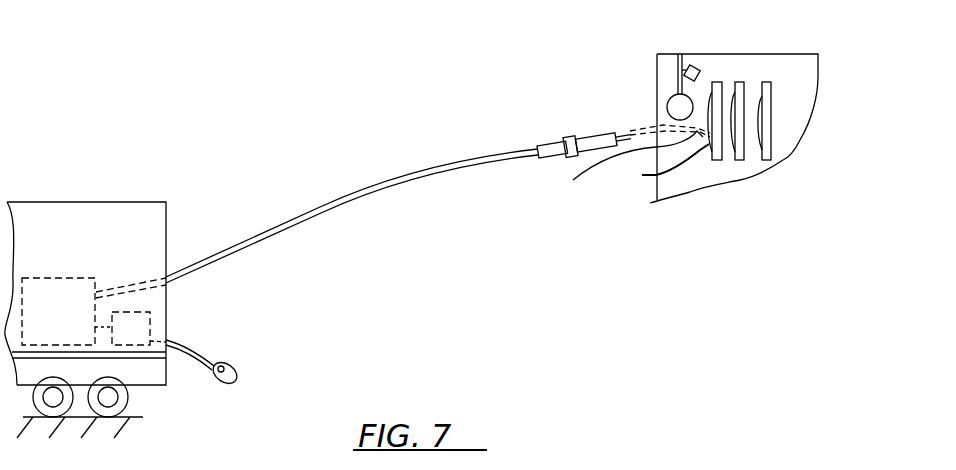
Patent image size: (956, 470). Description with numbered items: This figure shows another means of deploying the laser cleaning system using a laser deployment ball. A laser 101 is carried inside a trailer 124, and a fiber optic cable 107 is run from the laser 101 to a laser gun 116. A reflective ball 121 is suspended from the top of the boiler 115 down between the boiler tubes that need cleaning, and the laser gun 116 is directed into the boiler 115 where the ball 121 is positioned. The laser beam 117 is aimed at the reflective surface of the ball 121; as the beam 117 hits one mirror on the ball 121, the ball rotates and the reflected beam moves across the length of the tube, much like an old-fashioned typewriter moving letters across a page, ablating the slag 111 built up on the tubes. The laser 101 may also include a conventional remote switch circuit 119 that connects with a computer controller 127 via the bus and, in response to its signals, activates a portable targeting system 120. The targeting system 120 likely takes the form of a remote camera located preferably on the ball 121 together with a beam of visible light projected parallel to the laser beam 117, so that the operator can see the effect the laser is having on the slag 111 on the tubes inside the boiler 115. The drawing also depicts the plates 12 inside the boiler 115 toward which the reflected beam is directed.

The trailer 124 is at (64, 165).
The laser 101 is at (57, 278).
The computer controller 127 is at (150, 313).
The remote switch circuit 119 is at (230, 383).
The fiber optic cable 107 is at (321, 209).
The laser gun 116 is at (570, 135).
The laser beam 117 is at (615, 171).
The slag 111 is at (656, 156).
The reflective ball 121 is at (667, 96).
The portable targeting system 120 is at (697, 54).
The plates 12 is at (740, 82).
The boiler 115 is at (787, 54).